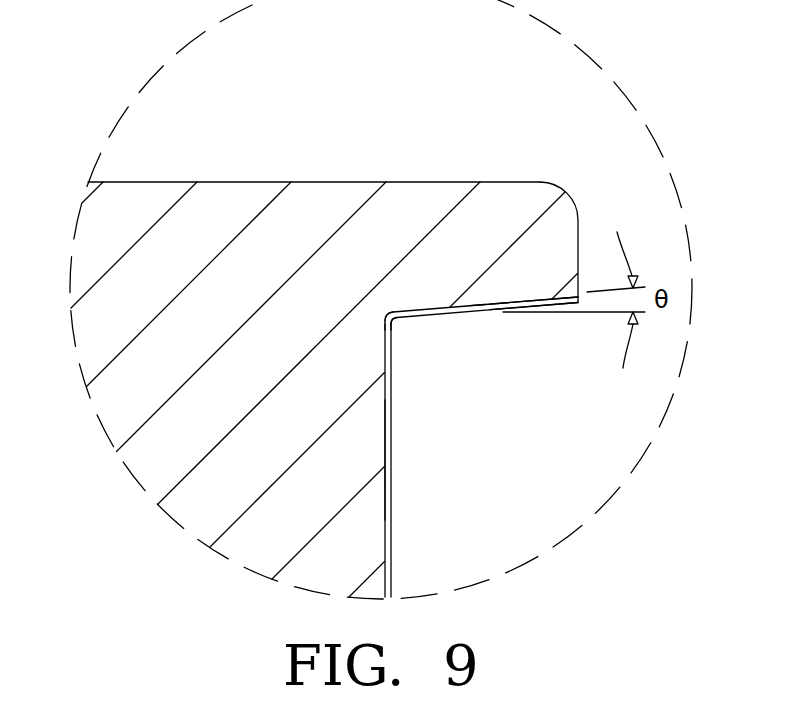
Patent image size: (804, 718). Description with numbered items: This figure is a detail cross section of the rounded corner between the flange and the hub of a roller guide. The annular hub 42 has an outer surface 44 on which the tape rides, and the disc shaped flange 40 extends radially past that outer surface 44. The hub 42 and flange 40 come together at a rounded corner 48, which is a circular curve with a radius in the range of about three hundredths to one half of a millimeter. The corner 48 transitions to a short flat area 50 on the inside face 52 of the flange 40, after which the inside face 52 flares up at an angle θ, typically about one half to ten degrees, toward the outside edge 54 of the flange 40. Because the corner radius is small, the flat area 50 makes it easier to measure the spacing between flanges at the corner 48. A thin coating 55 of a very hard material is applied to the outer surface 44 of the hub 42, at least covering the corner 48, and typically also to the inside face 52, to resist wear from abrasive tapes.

The flange 40 is at (530, 192).
The hub 42 is at (375, 530).
The outer surface 44 is at (383, 445).
The rounded corner 48 is at (397, 325).
The flat area 50 is at (417, 310).
The inside face 52 is at (528, 298).
The outside edge 54 is at (580, 225).
The coating 55 is at (385, 323).